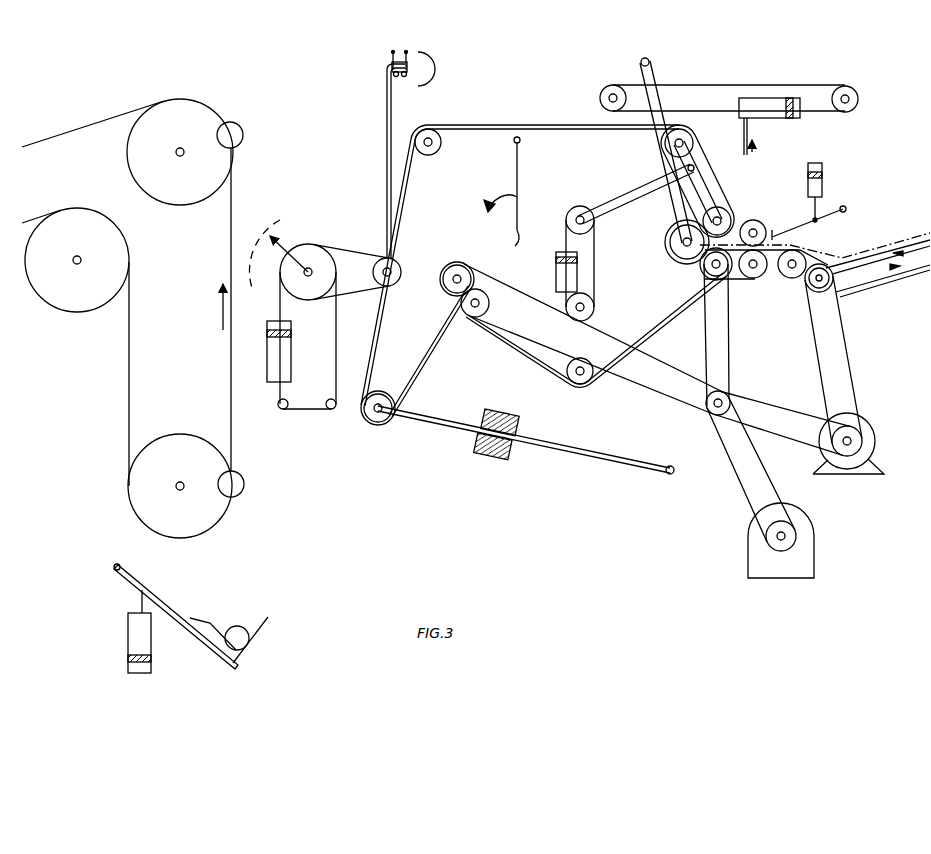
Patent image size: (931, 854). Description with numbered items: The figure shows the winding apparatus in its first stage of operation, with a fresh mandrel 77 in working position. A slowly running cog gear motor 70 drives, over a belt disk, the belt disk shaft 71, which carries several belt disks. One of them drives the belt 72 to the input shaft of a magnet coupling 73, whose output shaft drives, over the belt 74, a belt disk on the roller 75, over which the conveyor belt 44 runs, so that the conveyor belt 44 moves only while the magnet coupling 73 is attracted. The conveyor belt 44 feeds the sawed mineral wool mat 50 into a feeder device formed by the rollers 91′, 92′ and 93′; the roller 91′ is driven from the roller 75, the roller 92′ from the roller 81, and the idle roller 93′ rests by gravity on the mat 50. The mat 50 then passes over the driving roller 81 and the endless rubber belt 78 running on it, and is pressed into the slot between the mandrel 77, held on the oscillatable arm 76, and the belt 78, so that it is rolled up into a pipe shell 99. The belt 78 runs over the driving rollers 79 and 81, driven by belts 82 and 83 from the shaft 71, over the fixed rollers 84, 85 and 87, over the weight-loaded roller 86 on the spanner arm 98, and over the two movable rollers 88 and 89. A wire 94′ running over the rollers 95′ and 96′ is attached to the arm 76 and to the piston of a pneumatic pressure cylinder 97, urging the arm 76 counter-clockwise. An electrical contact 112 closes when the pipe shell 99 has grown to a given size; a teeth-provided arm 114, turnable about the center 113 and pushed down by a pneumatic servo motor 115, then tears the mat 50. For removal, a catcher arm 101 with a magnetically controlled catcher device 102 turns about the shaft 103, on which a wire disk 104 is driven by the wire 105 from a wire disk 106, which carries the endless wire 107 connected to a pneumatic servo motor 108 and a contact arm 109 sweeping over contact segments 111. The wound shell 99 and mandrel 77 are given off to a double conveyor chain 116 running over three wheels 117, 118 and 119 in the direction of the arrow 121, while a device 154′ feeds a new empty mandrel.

The wheel 119 is at (203, 108).
The wheel 117 is at (120, 252).
The wheel 118 is at (196, 448).
The double conveyor chain 116 is at (232, 209).
The arrow 121 is at (222, 308).
The mandrel feeding device 154′ is at (175, 607).
The catcher arm 101 is at (385, 130).
The magnetically controlled catcher device 102 is at (402, 78).
The fixed roller 87 is at (438, 150).
The endless rubber belt 78 is at (540, 128).
The movable roller 88 is at (690, 138).
The movable roller 89 is at (730, 216).
The oscillatable arm 76 is at (660, 104).
The mineral wool pipe shell 99 is at (669, 247).
The mandrel 77 is at (680, 262).
The electrical contact 112 is at (517, 197).
The wire disk 106 is at (318, 258).
The wire disk 104 is at (398, 265).
The wire 105 is at (376, 246).
The shaft 103 is at (392, 286).
The contact arm 109 is at (289, 248).
The contact segments 111 is at (304, 216).
The endless wire 107 is at (337, 350).
The pneumatic servo motor 108 is at (291, 360).
The weight-loaded roller 86 is at (380, 393).
The arm 98 is at (560, 446).
The driving roller 79 is at (456, 297).
The fixed roller 85 is at (472, 318).
The fixed roller 84 is at (586, 383).
The belt 82 is at (602, 332).
The roller 95′ is at (602, 88).
The roller 96′ is at (850, 88).
The wire 94′ is at (764, 85).
The pneumatic pressure cylinder 97 is at (775, 120).
The pneumatic servo motor 115 is at (823, 182).
The teeth-provided arm 114 is at (826, 214).
The center 113 is at (847, 210).
The mineral wool mat 50 is at (810, 246).
The idle roller 93′ is at (762, 229).
The driving roller 81 is at (705, 280).
The feeder roller 92′ is at (753, 280).
The feeder roller 91′ is at (792, 280).
The roller 75 is at (833, 285).
The conveyor belt 44 is at (880, 282).
The belt 83 is at (730, 350).
The belt disk shaft 71 is at (708, 410).
The belt 72 is at (782, 410).
The magnet coupling 73 is at (873, 426).
The belt 74 is at (855, 373).
The cog gear motor 70 is at (815, 560).